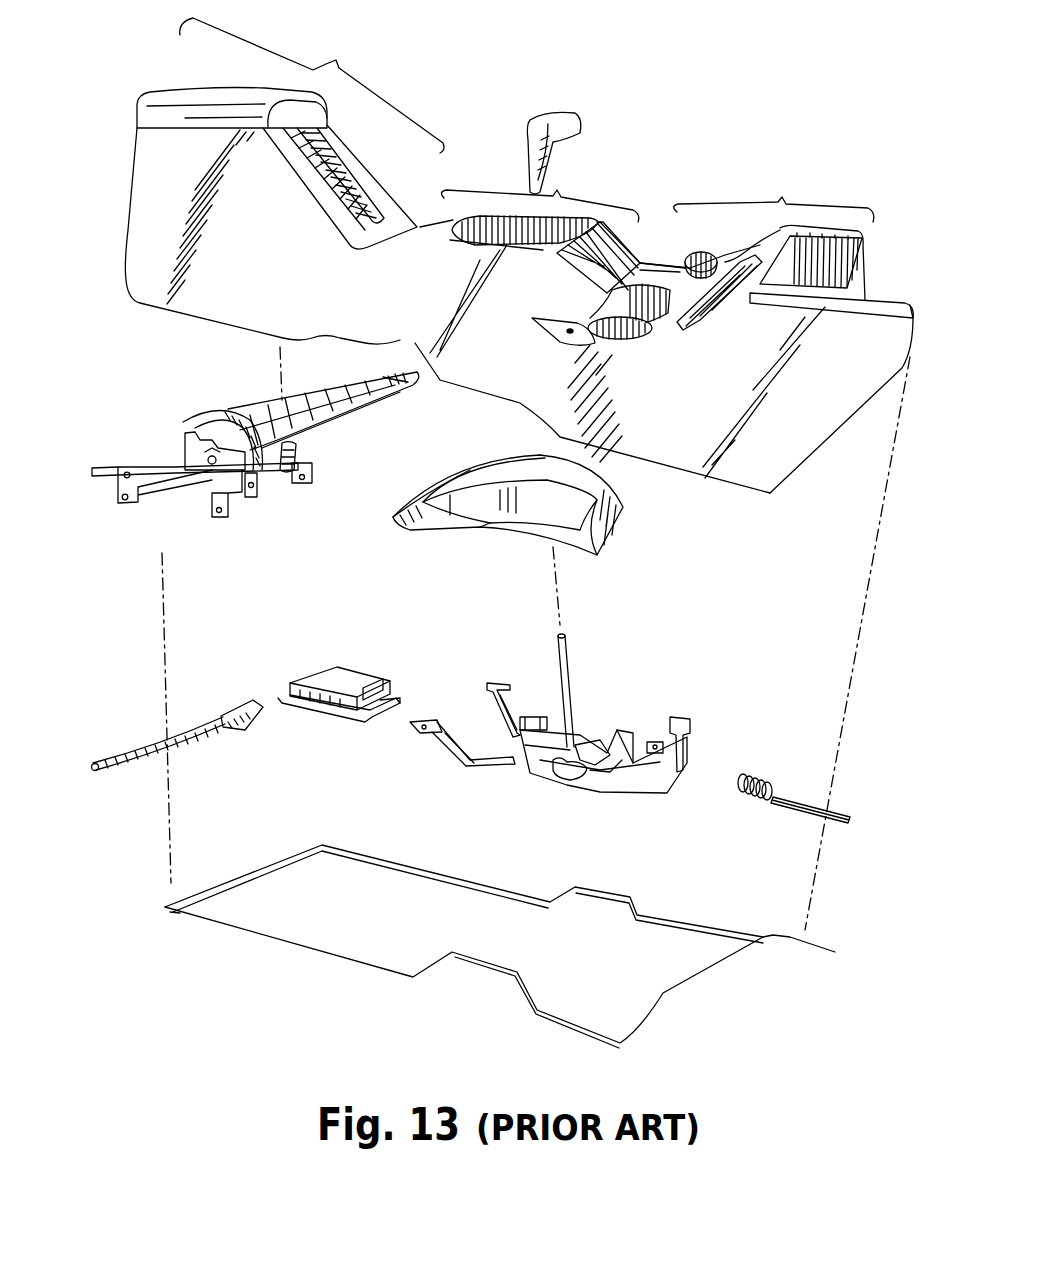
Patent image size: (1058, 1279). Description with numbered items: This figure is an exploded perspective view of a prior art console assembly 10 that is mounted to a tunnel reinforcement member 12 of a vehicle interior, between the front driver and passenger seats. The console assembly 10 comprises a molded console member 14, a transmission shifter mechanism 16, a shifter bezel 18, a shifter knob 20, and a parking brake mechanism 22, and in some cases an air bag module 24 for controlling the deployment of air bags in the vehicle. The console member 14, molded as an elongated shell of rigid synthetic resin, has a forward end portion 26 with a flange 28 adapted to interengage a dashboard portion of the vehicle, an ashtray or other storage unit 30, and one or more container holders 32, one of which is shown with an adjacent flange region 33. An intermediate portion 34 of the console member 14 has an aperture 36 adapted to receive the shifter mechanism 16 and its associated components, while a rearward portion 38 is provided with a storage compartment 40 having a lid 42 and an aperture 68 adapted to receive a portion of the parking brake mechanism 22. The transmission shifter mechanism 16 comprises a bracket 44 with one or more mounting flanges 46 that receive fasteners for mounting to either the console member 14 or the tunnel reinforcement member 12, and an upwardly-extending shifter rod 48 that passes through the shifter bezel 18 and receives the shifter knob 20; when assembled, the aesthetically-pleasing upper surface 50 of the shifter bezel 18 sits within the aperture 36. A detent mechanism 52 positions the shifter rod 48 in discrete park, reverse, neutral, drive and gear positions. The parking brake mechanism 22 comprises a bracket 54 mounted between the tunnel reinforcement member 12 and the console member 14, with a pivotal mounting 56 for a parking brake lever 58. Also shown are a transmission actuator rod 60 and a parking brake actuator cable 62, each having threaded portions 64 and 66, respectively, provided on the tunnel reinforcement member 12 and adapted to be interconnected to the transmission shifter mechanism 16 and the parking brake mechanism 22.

The console assembly 10 is at (480, 78).
The tunnel reinforcement member 12 is at (593, 1027).
The console member 14 is at (380, 202).
The transmission shifter mechanism 16 is at (560, 783).
The shifter bezel 18 is at (480, 532).
The shifter knob 20 is at (573, 113).
The parking brake mechanism 22 is at (170, 457).
The air bag module 24 is at (328, 718).
The forward end portion 26 is at (774, 234).
The flange 28 is at (873, 303).
The ashtray or other storage unit 30 is at (722, 288).
The container holders 32 is at (672, 270).
The flange 33 is at (577, 330).
The intermediate portion 34 is at (664, 326).
The aperture 36 is at (499, 216).
The rearward portion 38 is at (312, 133).
The storage compartment 40 is at (130, 185).
The lid 42 is at (152, 95).
The bracket 44 is at (588, 747).
The mounting flanges 46 is at (487, 692).
The shifter rod 48 is at (567, 665).
The upper surface 50 is at (443, 485).
The detent mechanism 52 is at (543, 762).
The bracket 54 is at (172, 490).
The pivotal mounting 56 is at (212, 478).
The parking brake lever 58 is at (340, 420).
The transmission actuator rod 60 is at (808, 800).
The parking brake actuator cable 62 is at (147, 740).
The threaded portion 64 is at (760, 783).
The threaded portion 66 is at (247, 708).
The aperture 68 is at (343, 177).